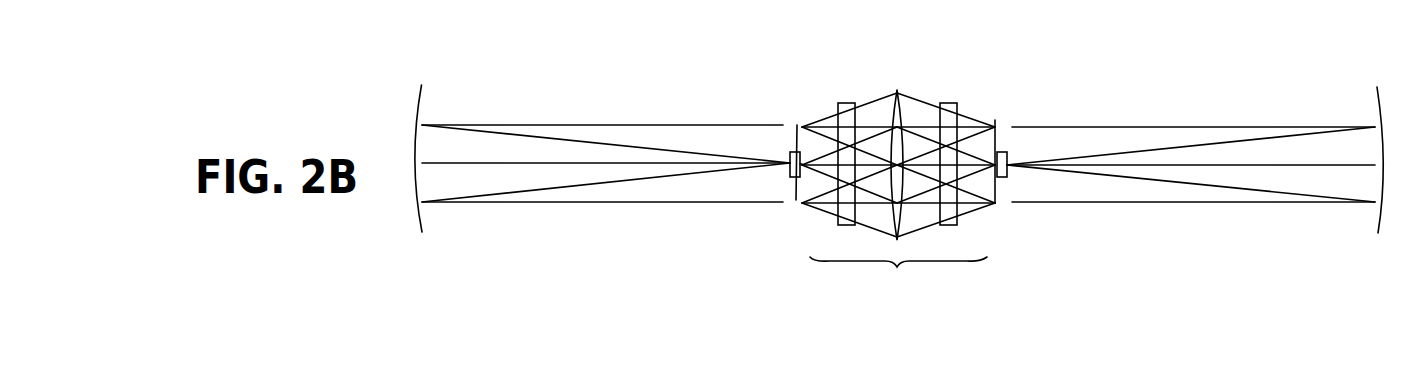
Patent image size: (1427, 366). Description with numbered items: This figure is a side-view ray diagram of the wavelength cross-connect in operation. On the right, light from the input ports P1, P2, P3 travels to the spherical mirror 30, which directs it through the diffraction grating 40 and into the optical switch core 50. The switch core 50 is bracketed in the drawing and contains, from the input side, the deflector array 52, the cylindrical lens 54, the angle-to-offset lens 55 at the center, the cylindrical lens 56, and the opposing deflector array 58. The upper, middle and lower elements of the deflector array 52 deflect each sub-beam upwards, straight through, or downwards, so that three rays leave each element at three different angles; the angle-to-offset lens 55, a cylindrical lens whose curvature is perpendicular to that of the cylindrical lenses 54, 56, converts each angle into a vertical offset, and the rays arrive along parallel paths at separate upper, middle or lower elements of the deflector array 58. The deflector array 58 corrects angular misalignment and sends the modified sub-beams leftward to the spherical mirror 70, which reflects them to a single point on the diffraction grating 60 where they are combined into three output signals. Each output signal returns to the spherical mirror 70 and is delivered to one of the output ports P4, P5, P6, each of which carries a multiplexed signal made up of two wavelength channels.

The spherical mirror 30 is at (1380, 110).
The diffraction grating 40 is at (1002, 152).
The optical switch core 50 is at (898, 279).
The deflector array 52 is at (995, 120).
The cylindrical lens 54 is at (949, 103).
The angle-to-offset (ATO) lens 55 is at (897, 90).
The cylindrical lens 56 is at (844, 103).
The deflector array 58 is at (797, 125).
The diffraction grating 60 is at (796, 200).
The spherical mirror 70 is at (416, 207).
The port 1 P1 is at (1020, 127).
The port 2 P2 is at (1008, 163).
The port 3 P3 is at (1012, 203).
The port 4 P4 is at (784, 122).
The port 5 P5 is at (785, 161).
The port 6 P6 is at (784, 204).